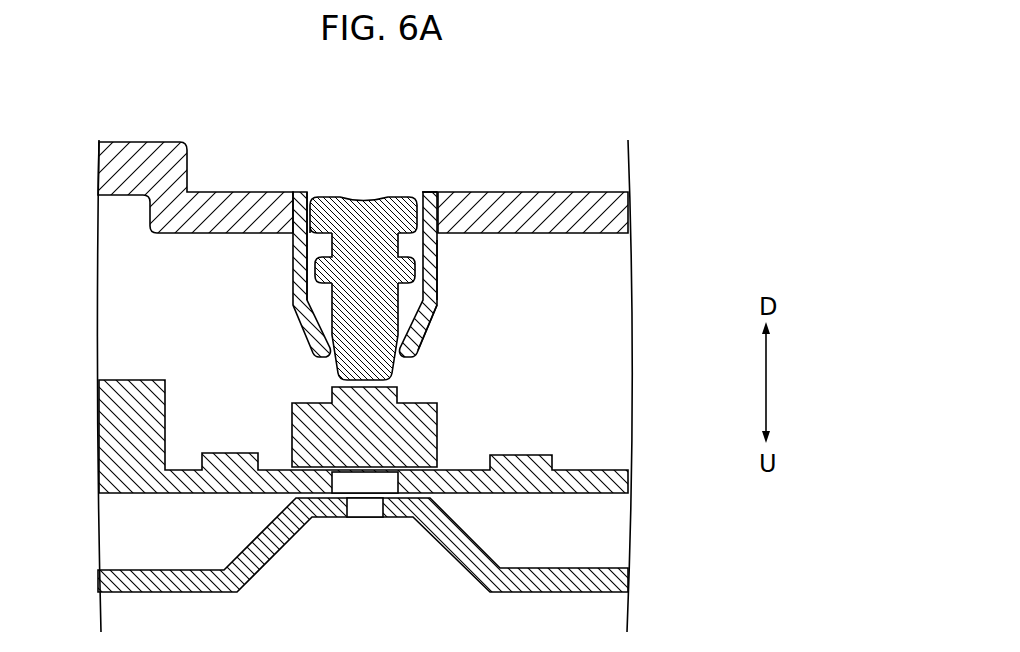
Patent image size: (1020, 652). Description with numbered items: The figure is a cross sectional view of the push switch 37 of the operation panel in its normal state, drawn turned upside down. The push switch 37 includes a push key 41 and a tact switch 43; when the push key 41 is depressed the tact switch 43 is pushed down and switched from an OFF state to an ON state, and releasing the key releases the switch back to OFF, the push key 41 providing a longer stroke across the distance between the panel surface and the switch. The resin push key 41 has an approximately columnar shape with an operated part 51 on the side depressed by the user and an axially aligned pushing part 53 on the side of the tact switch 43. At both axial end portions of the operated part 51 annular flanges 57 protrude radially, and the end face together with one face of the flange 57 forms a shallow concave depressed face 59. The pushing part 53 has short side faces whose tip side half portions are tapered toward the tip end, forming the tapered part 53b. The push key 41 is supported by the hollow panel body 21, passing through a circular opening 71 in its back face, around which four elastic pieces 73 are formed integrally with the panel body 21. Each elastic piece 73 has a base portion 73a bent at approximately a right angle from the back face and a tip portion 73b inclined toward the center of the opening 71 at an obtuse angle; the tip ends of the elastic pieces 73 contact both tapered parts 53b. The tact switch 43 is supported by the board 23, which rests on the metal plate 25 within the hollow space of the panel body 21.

The panel body 21 is at (148, 168).
The board 23 is at (622, 483).
The metal plate 25 is at (618, 580).
The push switch 37 is at (356, 156).
The push key 41 is at (309, 294).
The tact switch 43 is at (288, 440).
The operated part 51 is at (327, 246).
The pushing part 53 is at (342, 343).
The tapered part 53b is at (335, 352).
The annular flange 57 is at (432, 243).
The depressed face 59 is at (375, 200).
The opening 71 is at (305, 222).
The elastic piece 73 is at (298, 243).
The base portion 73a is at (429, 289).
The tip portion 73b is at (412, 328).